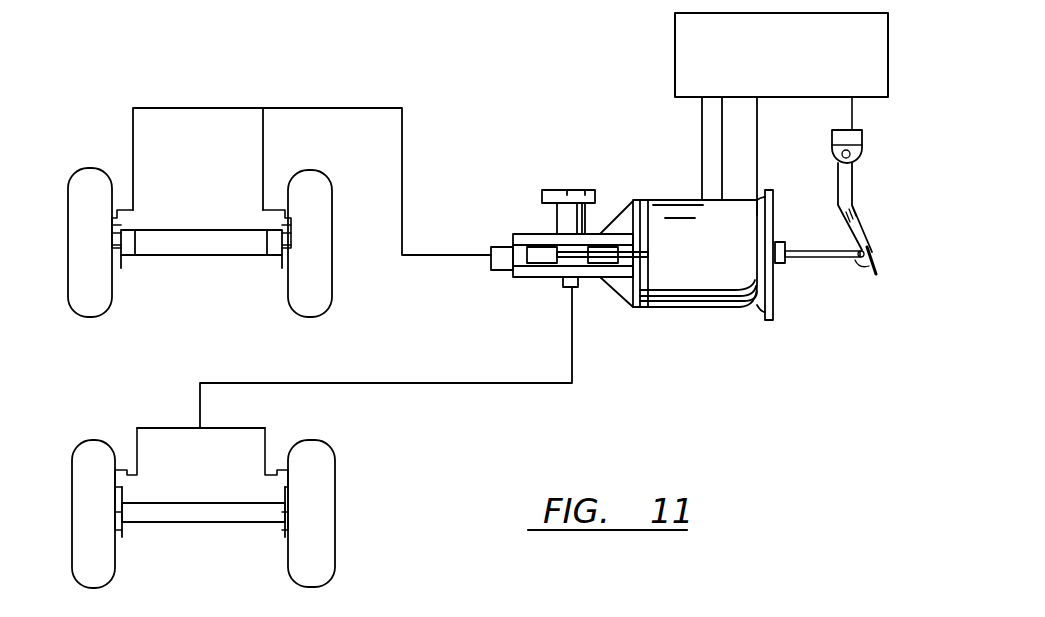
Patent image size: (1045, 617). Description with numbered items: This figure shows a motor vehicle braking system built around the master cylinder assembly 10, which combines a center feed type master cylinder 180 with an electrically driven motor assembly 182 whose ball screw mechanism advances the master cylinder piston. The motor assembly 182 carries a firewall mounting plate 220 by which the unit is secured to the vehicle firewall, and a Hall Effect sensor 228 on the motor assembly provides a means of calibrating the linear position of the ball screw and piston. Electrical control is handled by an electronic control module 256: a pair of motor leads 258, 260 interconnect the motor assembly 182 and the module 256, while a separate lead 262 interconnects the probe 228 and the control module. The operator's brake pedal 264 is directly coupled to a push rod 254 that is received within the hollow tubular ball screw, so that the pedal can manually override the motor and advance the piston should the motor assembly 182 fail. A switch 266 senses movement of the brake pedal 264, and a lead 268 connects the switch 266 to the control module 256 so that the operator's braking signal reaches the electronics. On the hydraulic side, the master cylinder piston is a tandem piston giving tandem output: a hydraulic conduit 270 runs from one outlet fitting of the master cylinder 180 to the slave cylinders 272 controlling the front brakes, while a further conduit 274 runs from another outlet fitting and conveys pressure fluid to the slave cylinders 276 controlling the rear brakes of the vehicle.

The master cylinder assembly 10 is at (642, 185).
The master cylinder 180 is at (522, 218).
The motor assembly 182 is at (716, 320).
The firewall mounting plate 220 is at (772, 321).
The Hall Effect sensor 228 is at (757, 198).
The push rod 254 is at (817, 258).
The electronic control module 256 is at (797, 62).
The motor lead 258 is at (702, 121).
The motor lead 260 is at (722, 151).
The lead 262 is at (758, 151).
The brake pedal 264 is at (877, 261).
The switch 266 is at (862, 143).
The lead 268 is at (853, 111).
The hydraulic conduit 270 is at (297, 106).
The slave cylinders 272 is at (118, 208).
The conduit 274 is at (487, 382).
The slave cylinders 276 is at (123, 472).